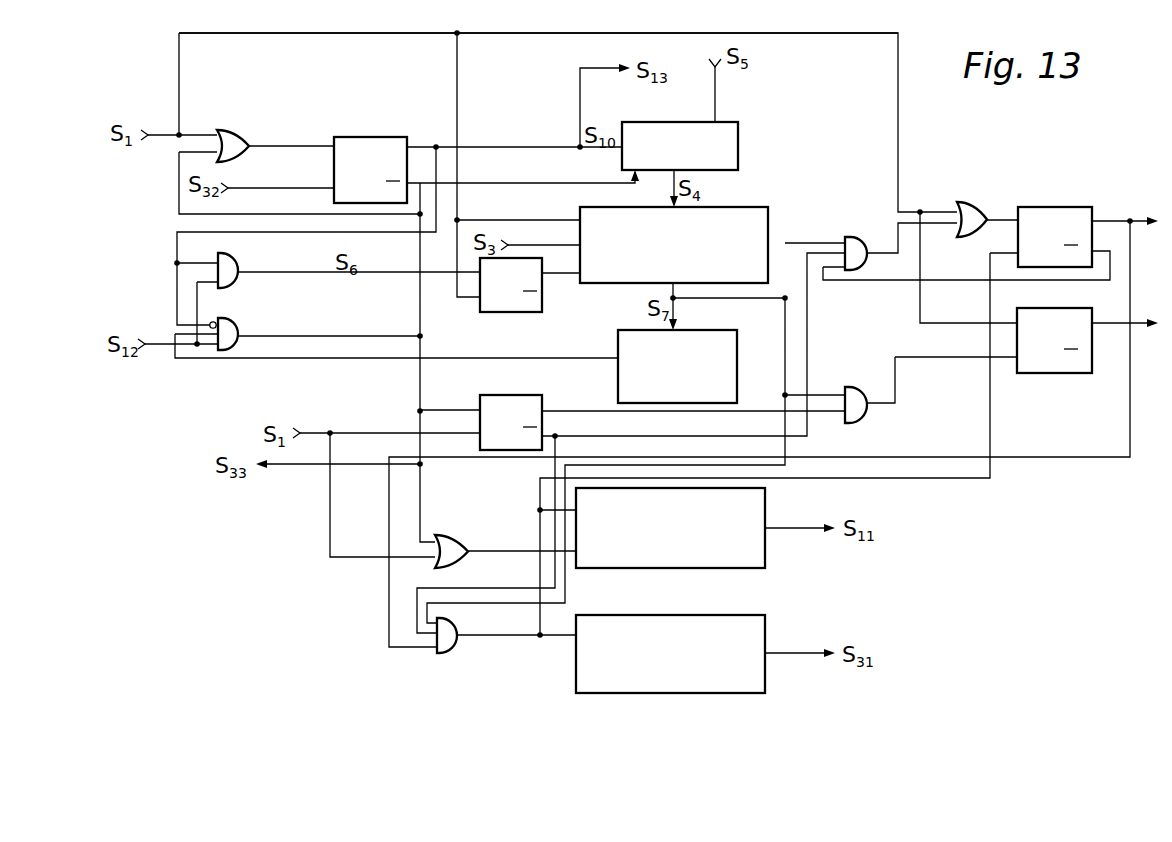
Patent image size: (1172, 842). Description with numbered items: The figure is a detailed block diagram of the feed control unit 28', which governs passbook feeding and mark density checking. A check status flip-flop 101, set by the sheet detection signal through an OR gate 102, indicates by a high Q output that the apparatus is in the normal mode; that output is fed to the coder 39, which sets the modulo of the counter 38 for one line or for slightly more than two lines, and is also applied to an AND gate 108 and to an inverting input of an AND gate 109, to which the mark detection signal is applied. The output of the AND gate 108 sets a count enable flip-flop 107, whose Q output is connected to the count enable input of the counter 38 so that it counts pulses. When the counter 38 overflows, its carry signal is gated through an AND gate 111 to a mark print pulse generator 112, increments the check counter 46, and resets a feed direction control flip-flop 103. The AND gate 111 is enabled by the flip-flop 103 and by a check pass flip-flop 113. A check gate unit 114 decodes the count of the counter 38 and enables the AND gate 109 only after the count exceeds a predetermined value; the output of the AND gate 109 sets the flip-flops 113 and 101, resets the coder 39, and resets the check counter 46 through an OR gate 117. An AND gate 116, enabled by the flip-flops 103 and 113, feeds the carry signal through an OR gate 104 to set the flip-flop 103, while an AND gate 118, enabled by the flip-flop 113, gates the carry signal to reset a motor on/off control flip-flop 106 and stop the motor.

The feed control unit 28' is at (599, 82).
The counter 38 is at (768, 214).
The coder 39 is at (738, 141).
The check counter 46 is at (765, 560).
The check status flip-flop 101 is at (372, 137).
The OR gate 102 is at (229, 130).
The feed direction control flip-flop 103 is at (1070, 207).
The OR gate 104 is at (973, 206).
The motor on/off control flip-flop 106 is at (1068, 373).
The count enable flip-flop 107 is at (512, 312).
The AND gate 108 is at (240, 268).
The AND gate 109 is at (240, 330).
The AND gate 111 is at (452, 653).
The mark print pulse generator 112 is at (765, 680).
The check pass flip-flop 113 is at (522, 395).
The check gate unit 114 is at (737, 350).
The AND gate 116 is at (855, 237).
The OR gate 117 is at (458, 535).
The AND gate 118 is at (856, 387).